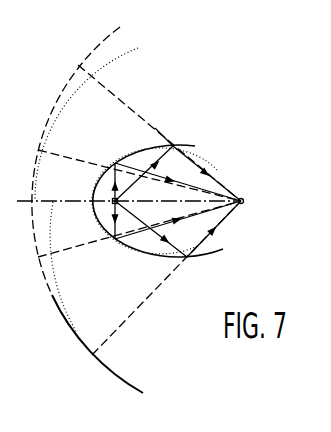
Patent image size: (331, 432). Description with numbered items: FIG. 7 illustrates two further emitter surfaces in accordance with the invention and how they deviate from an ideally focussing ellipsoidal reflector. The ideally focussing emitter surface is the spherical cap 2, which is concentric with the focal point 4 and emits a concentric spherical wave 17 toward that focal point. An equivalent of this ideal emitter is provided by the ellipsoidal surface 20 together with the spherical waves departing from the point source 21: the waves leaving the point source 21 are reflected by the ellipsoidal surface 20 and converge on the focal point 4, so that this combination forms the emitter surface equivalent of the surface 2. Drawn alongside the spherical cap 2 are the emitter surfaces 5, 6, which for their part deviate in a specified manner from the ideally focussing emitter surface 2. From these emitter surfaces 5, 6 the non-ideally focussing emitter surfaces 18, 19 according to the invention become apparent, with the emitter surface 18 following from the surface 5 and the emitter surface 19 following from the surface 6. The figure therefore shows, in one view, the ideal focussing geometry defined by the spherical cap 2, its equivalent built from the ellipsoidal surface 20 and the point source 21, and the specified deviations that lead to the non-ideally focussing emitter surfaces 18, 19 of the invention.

The spherical cap 2 is at (100, 44).
The focal point 4 is at (245, 201).
The emitter surface 5 is at (105, 64).
The emitter surface 6 is at (55, 264).
The concentric spherical wave 17 is at (226, 218).
The non-ideally focussing emitter surface 18 is at (206, 152).
The non-ideally focussing emitter surface 19 is at (99, 206).
The ellipsoidal surface 20 is at (184, 146).
The point source 21 is at (110, 194).